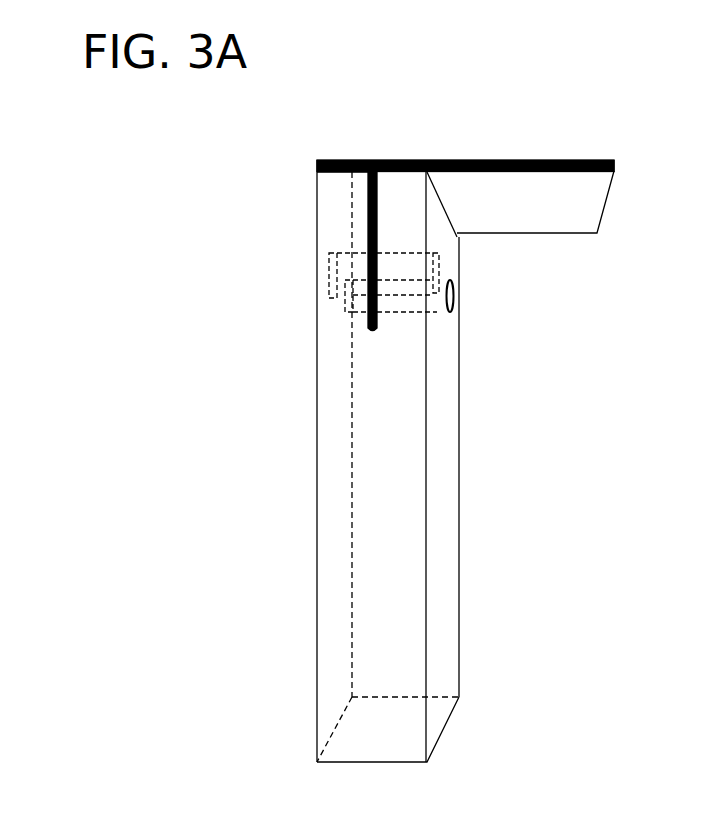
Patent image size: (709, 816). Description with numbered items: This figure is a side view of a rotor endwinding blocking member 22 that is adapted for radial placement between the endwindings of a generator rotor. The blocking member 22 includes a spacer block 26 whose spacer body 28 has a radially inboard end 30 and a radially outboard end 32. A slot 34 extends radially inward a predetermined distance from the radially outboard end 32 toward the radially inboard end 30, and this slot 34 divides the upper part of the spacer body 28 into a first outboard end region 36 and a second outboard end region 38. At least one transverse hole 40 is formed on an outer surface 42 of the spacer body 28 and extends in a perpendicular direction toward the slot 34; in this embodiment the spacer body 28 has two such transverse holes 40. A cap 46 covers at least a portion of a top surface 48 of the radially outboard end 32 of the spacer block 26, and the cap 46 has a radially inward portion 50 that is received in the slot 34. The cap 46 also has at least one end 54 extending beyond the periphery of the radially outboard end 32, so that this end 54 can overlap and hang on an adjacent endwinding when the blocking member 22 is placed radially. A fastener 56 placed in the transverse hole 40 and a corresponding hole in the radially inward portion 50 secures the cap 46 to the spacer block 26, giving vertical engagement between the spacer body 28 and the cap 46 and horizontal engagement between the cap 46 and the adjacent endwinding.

The rotor endwinding blocking member 22 is at (152, 157).
The spacer block 26 is at (262, 537).
The spacer body 28 is at (365, 637).
The radially inboard end 30 is at (358, 741).
The radially outboard end 32 is at (340, 195).
The slot 34 is at (368, 335).
The first outboard end region 36 is at (345, 228).
The second outboard end region 38 is at (405, 237).
The transverse hole 40 is at (433, 300).
The outer surface 42 is at (438, 219).
The cap 46 is at (465, 161).
The top surface 48 is at (317, 162).
The radially inward portion 50 is at (374, 268).
The end 54 is at (572, 161).
The fastener 56 is at (453, 312).